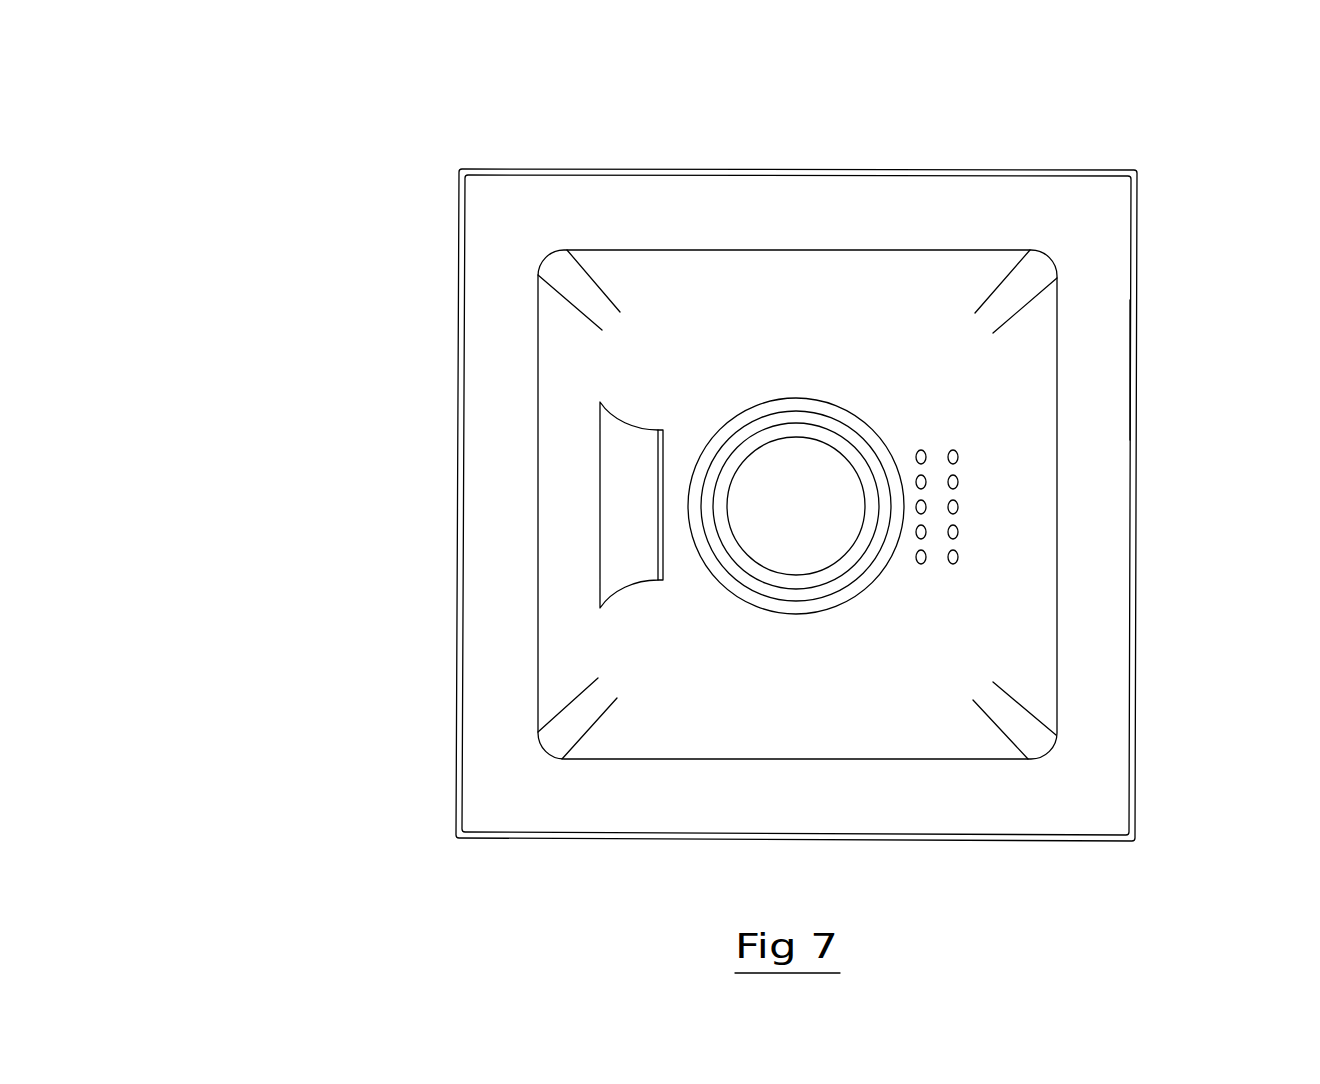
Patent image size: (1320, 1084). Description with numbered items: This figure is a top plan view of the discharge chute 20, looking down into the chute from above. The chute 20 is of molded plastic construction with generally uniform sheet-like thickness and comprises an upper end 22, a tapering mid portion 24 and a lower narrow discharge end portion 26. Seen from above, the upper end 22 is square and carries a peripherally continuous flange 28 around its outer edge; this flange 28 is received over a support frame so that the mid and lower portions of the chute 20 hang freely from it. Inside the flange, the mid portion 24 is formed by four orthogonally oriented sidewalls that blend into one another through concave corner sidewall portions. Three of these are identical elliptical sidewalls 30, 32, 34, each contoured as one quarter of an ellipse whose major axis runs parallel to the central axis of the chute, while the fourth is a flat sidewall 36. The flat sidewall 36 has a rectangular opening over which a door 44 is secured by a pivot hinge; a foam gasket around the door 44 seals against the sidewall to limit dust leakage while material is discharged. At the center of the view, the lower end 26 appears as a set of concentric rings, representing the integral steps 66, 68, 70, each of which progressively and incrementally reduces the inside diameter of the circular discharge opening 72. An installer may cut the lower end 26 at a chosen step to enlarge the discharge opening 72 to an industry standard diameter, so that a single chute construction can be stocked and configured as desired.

The chute 20 is at (328, 635).
The upper end 22 is at (1135, 255).
The tapering mid portion 24 is at (1033, 509).
The lower narrow discharge end portion 26 is at (830, 402).
The peripherally continuous flange 28 is at (1135, 368).
The elliptical sidewall 30 is at (755, 697).
The elliptical sidewall 32 is at (1012, 580).
The elliptical sidewall 34 is at (563, 532).
The flat sidewall 36 is at (793, 317).
The door 44 is at (618, 492).
The step 66 is at (857, 425).
The step 68 is at (861, 569).
The step 70 is at (793, 582).
The circular chute discharge opening 72 is at (735, 540).